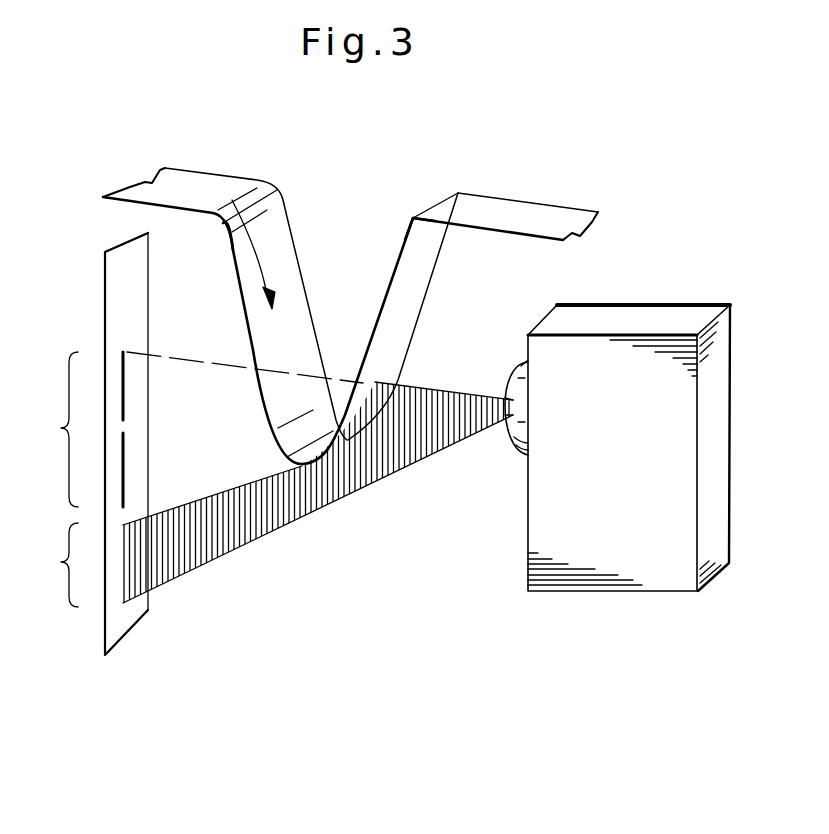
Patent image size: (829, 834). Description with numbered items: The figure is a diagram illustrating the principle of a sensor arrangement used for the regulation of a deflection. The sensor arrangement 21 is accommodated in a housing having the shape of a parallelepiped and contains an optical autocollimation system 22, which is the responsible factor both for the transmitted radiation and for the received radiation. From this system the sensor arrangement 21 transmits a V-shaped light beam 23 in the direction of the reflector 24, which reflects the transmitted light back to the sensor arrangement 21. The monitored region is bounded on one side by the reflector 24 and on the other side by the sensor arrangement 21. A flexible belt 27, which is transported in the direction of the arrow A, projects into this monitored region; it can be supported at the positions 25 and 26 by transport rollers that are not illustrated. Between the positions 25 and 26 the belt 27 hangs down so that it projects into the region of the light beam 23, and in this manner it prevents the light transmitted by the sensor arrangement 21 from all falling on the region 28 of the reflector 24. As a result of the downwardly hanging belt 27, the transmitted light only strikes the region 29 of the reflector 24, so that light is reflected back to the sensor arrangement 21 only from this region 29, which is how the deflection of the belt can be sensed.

The sensor arrangement 21 is at (637, 573).
The optical autocollimation system 22 is at (517, 440).
The V-shaped light beam 23 is at (263, 521).
The reflector 24 is at (118, 624).
The position 25 is at (212, 230).
The position 26 is at (411, 225).
The flexible belt 27 is at (525, 217).
The region of the reflector 28 is at (52, 429).
The region of the reflector 29 is at (52, 565).
The direction of the arrow A is at (260, 240).